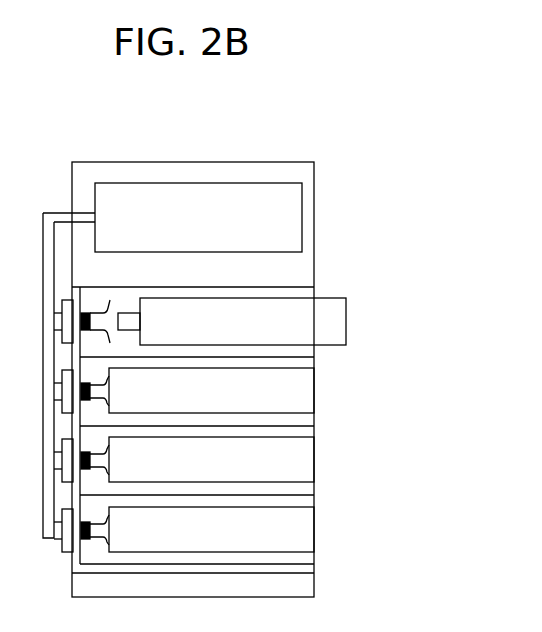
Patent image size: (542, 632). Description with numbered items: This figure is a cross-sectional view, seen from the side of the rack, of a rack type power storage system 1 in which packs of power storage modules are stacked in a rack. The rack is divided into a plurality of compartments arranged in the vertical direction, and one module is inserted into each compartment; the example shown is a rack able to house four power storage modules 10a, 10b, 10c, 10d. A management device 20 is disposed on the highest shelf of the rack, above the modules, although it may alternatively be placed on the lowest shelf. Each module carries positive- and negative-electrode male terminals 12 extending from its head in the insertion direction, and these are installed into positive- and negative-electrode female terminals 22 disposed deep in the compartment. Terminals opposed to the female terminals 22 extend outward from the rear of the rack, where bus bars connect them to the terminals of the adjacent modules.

The rack type power storage system 1 is at (204, 115).
The management device 20 is at (302, 218).
The female terminal 22 is at (97, 333).
The male terminal 12 is at (130, 312).
The power storage module 10a is at (325, 322).
The power storage module 10b is at (292, 390).
The power storage module 10c is at (295, 459).
The power storage module 10d is at (295, 527).